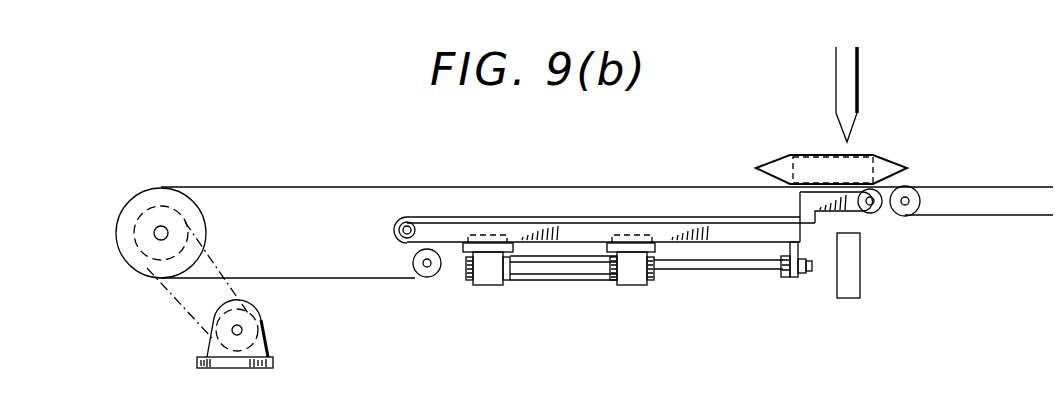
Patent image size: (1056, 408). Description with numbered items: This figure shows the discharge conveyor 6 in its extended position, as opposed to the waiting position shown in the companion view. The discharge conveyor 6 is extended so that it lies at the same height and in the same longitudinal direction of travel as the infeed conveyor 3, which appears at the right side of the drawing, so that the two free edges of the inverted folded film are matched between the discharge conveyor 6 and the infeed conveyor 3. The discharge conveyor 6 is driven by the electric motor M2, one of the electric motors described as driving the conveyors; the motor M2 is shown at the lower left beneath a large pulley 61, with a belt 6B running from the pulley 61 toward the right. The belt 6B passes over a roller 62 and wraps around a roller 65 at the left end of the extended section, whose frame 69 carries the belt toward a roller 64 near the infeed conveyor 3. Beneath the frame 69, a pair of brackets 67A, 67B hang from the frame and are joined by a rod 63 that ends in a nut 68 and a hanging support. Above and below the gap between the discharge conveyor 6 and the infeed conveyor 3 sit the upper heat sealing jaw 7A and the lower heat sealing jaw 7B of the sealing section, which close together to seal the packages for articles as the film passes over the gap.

The infeed conveyor 3 is at (963, 186).
The discharge conveyor 6 is at (640, 245).
The conveyor belt 6B is at (448, 187).
The upper heat sealing jaw 7A is at (860, 90).
The lower heat sealing jaw 7B is at (853, 285).
The drive pulley 61 is at (152, 197).
The roller 62 is at (427, 278).
The rod 63 is at (739, 250).
The roller 64 is at (878, 213).
The roller 65 is at (394, 230).
The bracket 67A is at (521, 282).
The bracket 67B is at (615, 260).
The nut 68 is at (645, 280).
The frame 69 is at (566, 232).
The electric motor M2 is at (285, 325).